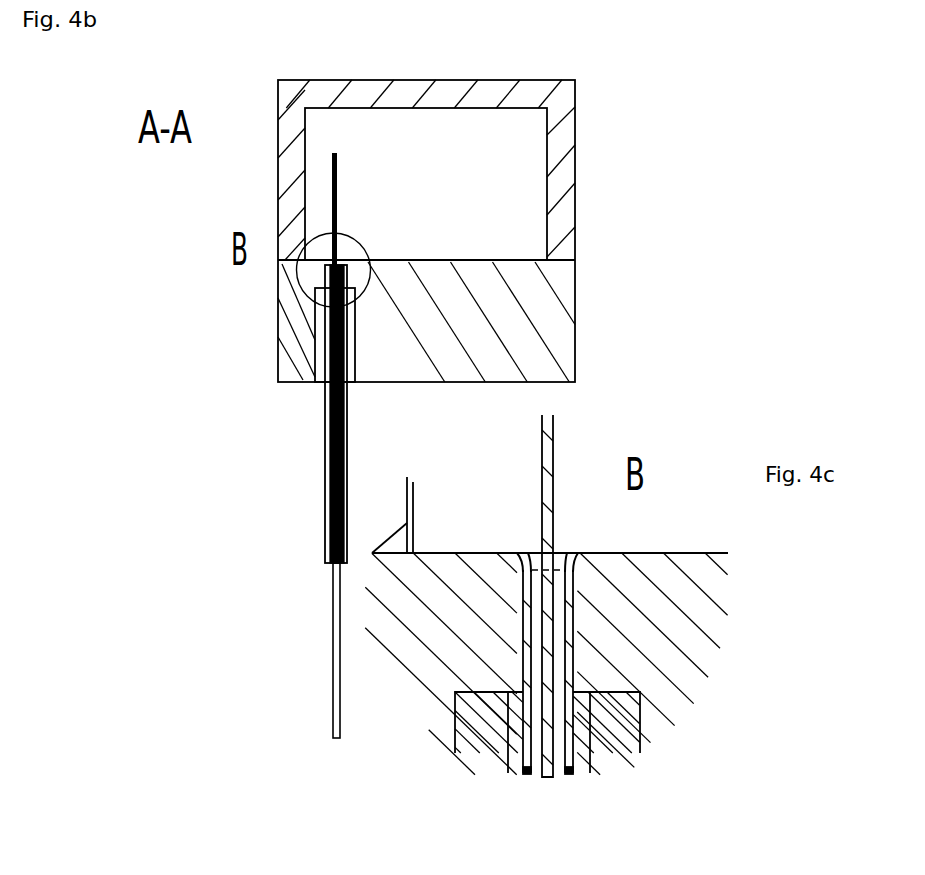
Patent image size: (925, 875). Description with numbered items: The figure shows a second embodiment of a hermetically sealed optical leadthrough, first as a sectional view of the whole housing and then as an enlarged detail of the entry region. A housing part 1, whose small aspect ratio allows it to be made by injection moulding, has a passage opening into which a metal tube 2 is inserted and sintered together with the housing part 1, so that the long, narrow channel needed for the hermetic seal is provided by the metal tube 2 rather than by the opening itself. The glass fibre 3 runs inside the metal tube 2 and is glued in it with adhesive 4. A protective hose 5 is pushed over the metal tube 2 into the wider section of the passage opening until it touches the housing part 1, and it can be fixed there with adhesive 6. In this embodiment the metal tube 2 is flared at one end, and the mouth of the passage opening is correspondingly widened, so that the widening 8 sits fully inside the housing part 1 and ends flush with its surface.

The housing part 1 is at (682, 645).
The metal tube 2 is at (573, 768).
The glass fibre 3 is at (553, 467).
The adhesive 4 is at (561, 762).
The protective hose 5 is at (518, 762).
The adhesive 6 is at (467, 750).
The widening 8 is at (584, 563).